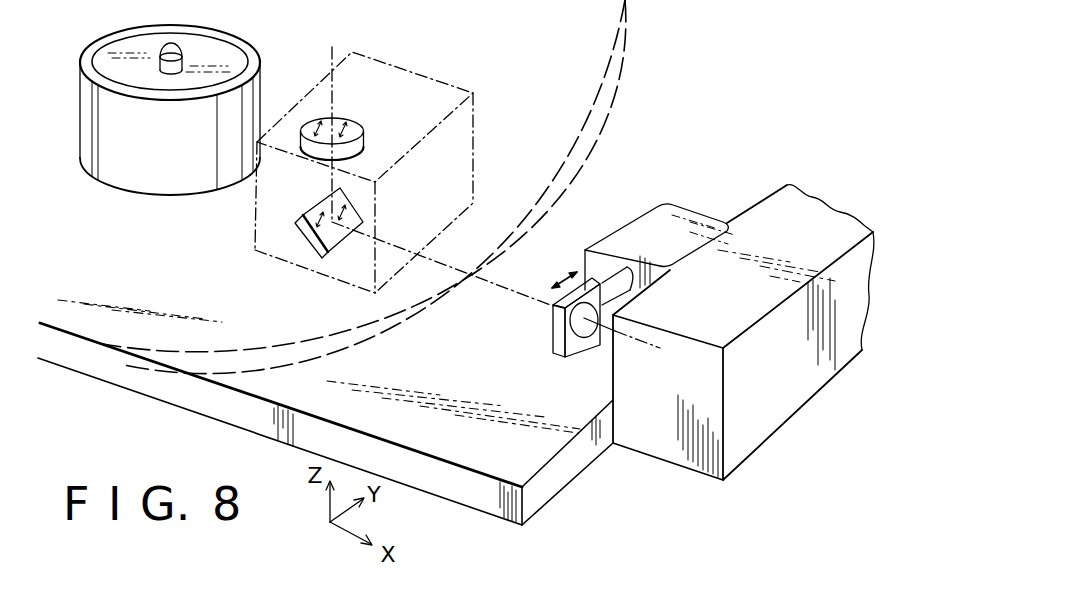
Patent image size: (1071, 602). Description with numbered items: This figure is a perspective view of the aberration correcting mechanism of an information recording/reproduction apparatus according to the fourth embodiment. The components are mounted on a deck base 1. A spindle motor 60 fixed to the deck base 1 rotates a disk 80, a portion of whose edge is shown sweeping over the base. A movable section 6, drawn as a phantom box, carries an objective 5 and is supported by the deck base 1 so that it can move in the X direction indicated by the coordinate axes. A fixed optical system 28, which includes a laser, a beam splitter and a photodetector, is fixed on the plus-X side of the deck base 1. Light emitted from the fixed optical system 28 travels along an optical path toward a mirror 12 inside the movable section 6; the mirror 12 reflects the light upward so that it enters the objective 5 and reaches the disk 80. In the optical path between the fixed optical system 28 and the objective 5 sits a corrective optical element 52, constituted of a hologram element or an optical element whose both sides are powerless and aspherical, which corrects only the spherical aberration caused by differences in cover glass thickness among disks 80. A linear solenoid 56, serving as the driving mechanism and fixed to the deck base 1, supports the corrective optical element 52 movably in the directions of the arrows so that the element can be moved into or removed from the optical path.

The deck base 1 is at (578, 460).
The objective 5 is at (345, 121).
The movable section 6 is at (253, 202).
The mirror 12 is at (318, 257).
The fixed optical system 28 is at (803, 385).
The corrective optical element 52 is at (557, 342).
The linear solenoid 56 is at (645, 218).
The spindle motor 60 is at (117, 182).
The disk 80 is at (626, 50).